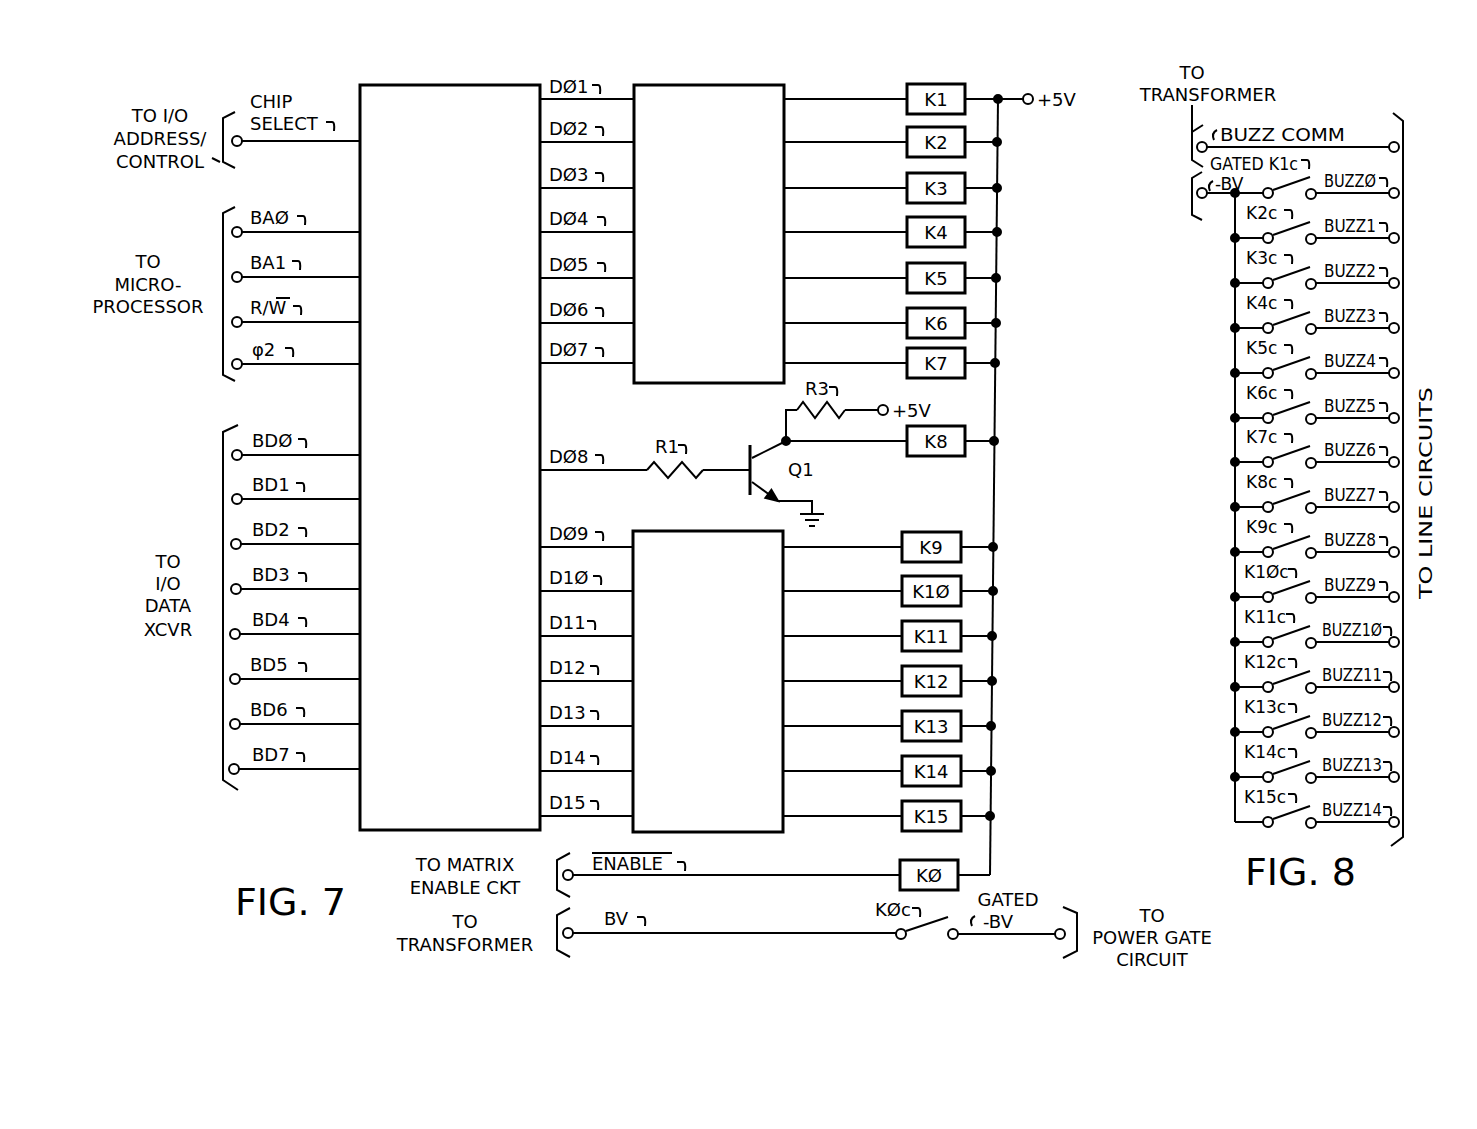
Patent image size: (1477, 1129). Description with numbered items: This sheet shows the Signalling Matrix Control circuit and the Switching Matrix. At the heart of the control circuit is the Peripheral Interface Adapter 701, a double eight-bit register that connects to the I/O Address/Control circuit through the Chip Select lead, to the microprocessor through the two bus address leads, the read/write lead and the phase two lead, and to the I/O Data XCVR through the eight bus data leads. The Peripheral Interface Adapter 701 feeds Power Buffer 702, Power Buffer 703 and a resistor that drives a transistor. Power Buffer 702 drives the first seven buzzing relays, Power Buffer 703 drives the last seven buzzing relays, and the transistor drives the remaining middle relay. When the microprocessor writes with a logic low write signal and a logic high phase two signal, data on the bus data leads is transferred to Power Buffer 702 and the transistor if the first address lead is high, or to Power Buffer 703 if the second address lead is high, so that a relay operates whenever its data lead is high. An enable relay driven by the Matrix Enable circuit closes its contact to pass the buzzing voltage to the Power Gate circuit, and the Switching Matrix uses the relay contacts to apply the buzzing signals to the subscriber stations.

The Peripheral Interface Adapter (PIA) 701 is at (424, 334).
The Power Buffer 702 is at (684, 275).
The Power Buffer 703 is at (672, 739).